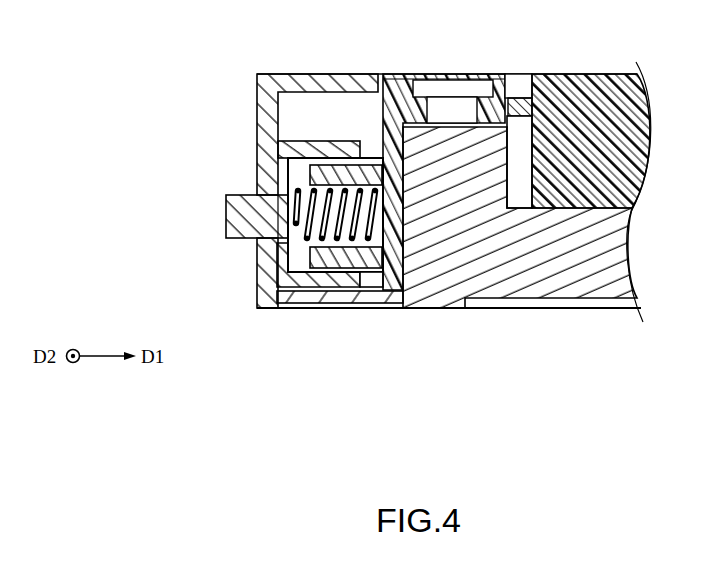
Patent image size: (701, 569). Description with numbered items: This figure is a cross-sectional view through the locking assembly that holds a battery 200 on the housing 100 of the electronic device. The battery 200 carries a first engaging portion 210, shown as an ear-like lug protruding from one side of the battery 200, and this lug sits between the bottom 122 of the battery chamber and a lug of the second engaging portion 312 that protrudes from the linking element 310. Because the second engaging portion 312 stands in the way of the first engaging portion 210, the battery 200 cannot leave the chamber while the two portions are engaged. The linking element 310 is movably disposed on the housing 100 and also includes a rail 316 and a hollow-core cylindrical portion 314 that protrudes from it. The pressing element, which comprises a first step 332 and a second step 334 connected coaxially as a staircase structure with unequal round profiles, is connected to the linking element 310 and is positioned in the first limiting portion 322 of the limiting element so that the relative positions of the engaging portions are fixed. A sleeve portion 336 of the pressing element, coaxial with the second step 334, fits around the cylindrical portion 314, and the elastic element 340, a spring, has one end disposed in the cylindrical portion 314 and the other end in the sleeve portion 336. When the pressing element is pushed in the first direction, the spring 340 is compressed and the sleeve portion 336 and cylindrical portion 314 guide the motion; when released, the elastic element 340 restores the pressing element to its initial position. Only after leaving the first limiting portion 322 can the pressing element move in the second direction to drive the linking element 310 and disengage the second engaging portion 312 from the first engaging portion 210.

The housing 100 is at (525, 283).
The bottom of the battery chamber 122 is at (512, 116).
The battery 200 is at (622, 85).
The first engaging portion 210 is at (505, 98).
The linking element 310 is at (383, 105).
The second engaging portion 312 is at (530, 100).
The cylindrical portion 314 is at (368, 262).
The rail 316 is at (420, 90).
The first limiting portion 322 is at (260, 190).
The first step 332 is at (233, 232).
The second step 334 is at (272, 243).
The sleeve portion 336 is at (317, 283).
The elastic element 340 is at (373, 228).